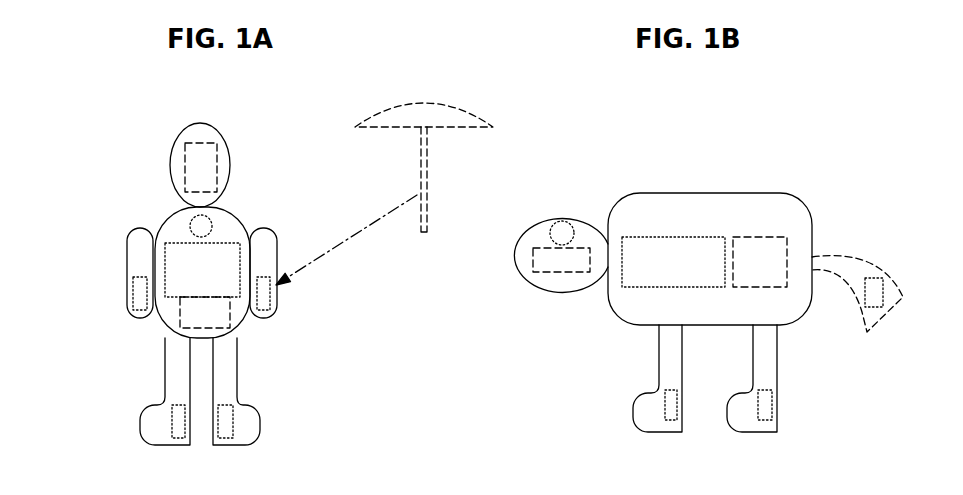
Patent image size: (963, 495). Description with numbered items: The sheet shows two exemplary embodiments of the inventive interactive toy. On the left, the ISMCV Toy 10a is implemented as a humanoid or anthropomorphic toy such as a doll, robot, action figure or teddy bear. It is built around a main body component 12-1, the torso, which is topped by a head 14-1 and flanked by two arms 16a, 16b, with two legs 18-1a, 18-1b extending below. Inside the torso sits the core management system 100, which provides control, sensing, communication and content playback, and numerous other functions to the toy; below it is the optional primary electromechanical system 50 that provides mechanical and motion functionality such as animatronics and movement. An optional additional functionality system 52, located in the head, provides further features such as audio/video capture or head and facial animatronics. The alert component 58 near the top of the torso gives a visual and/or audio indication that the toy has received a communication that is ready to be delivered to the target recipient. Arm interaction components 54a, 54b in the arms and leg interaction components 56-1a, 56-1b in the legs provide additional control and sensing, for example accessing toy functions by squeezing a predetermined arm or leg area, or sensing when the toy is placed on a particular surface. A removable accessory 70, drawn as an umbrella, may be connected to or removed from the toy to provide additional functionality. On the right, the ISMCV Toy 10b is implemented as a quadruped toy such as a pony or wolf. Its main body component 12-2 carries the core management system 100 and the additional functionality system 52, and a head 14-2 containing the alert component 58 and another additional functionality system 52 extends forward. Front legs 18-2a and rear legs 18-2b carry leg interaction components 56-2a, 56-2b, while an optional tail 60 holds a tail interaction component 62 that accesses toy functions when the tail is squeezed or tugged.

In FIG. 1A, the ISMCV Toy 10a is at (245, 138).
In FIG. 1B, the ISMCV Toy 10b is at (762, 170).
In FIG. 1A, the main body component 12-1 is at (232, 213).
In FIG. 1B, the main body component 12-2 is at (630, 327).
In FIG. 1A, the head 14-1 is at (170, 162).
In FIG. 1B, the head 14-2 is at (540, 292).
In FIG. 1A, the arm 16a is at (127, 250).
In FIG. 1A, the arm 16b is at (278, 247).
In FIG. 1A, the leg 18-1a is at (165, 357).
In FIG. 1A, the leg 18-1b is at (237, 357).
In FIG. 1B, the front legs 18-2a is at (633, 402).
In FIG. 1B, the rear legs 18-2b is at (778, 370).
In FIG. 1A, the primary electromechanical system 50 is at (230, 315).
In FIG. 1A, the additional functionality system 52 is at (187, 145).
In FIG. 1B, the additional functionality system 52 is at (538, 247).
In FIG. 1A, the arm interaction component 54a is at (133, 298).
In FIG. 1A, the arm interaction component 54b is at (270, 295).
In FIG. 1A, the leg interaction component 56-1a is at (172, 425).
In FIG. 1A, the leg interaction component 56-1b is at (232, 417).
In FIG. 1B, the leg interaction component 56-2a is at (672, 422).
In FIG. 1B, the leg interaction component 56-2b is at (765, 422).
In FIG. 1A, the alert component 58 is at (213, 228).
In FIG. 1B, the alert component 58 is at (562, 220).
In FIG. 1B, the tail 60 is at (862, 310).
In FIG. 1B, the tail interaction component 62 is at (870, 280).
In FIG. 1A, the removable accessory 70 is at (428, 103).
In FIG. 1A, the core management system 100 is at (188, 243).
In FIG. 1B, the core management system 100 is at (640, 238).